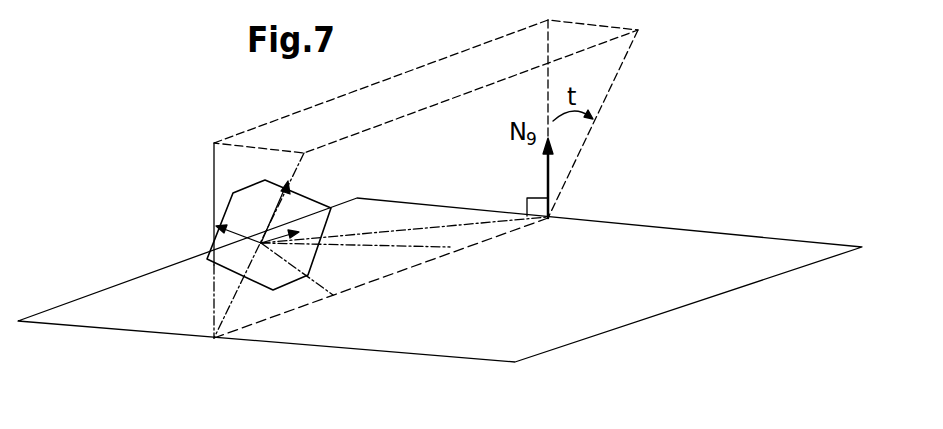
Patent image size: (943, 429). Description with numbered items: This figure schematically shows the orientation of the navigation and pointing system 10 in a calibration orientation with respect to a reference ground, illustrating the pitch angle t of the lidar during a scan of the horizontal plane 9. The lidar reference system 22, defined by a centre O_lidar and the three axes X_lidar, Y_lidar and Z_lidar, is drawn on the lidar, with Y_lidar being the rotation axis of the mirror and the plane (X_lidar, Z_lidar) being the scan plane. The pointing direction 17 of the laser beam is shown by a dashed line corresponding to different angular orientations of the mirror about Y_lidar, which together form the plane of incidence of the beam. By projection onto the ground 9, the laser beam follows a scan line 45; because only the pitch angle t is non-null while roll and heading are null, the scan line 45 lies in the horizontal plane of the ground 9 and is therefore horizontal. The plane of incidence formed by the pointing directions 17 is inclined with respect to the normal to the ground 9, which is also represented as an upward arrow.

The horizontal plane 9 is at (672, 247).
The navigation and pointing system 10 is at (213, 262).
The pointing direction 17 is at (453, 227).
The lidar reference system 22 is at (261, 243).
The scan line 45 is at (304, 306).